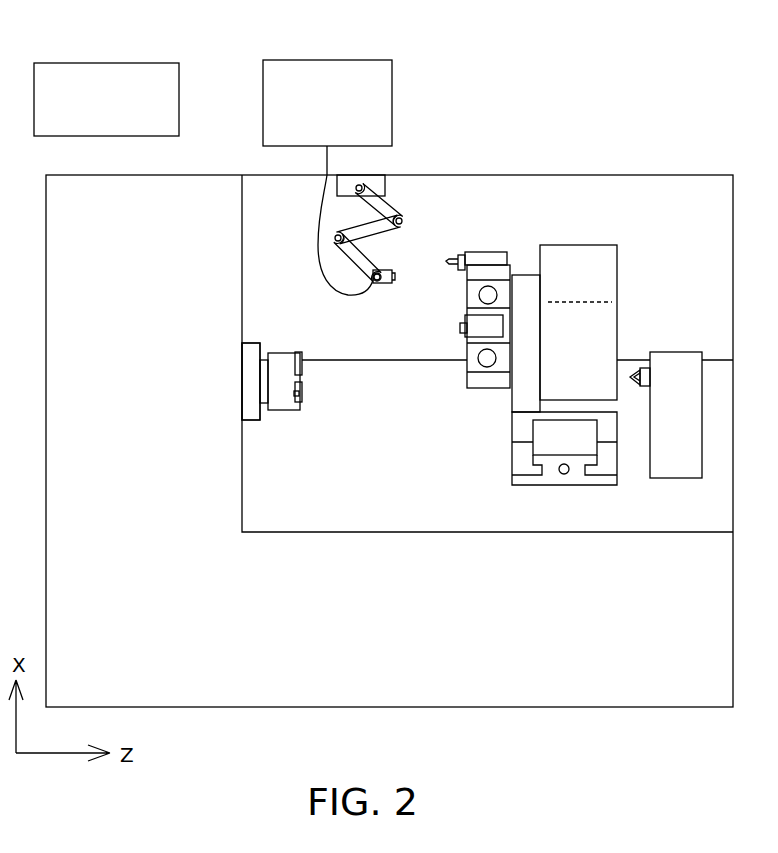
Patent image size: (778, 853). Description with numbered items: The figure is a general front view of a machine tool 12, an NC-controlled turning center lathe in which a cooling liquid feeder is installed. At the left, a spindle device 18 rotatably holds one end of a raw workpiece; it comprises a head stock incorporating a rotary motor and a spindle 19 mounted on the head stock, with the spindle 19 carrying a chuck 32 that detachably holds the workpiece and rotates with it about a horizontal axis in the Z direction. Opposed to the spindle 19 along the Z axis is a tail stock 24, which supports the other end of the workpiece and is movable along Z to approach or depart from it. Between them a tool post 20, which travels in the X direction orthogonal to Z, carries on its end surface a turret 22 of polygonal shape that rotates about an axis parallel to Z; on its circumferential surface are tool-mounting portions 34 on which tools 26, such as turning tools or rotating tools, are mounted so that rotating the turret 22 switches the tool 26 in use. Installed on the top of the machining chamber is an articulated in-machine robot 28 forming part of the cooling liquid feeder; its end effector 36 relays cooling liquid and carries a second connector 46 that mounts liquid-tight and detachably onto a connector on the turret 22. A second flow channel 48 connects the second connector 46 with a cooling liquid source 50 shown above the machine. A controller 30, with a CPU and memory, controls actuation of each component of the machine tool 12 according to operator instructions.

The machine tool 12 is at (662, 135).
The spindle device 18 is at (274, 422).
The spindle 19 is at (266, 332).
The tool post 20 is at (590, 244).
The turret 22 is at (488, 390).
The tail stock 24 is at (680, 352).
The tool 26 is at (473, 251).
The in-machine robot 28 is at (403, 203).
The controller 30 is at (57, 62).
The chuck 32 is at (313, 331).
The tool-mounting portion 34 is at (485, 360).
The end effector 36 is at (381, 270).
The second connector 46 is at (390, 280).
The second flow channel 48 is at (320, 200).
The cooling liquid source 50 is at (284, 59).